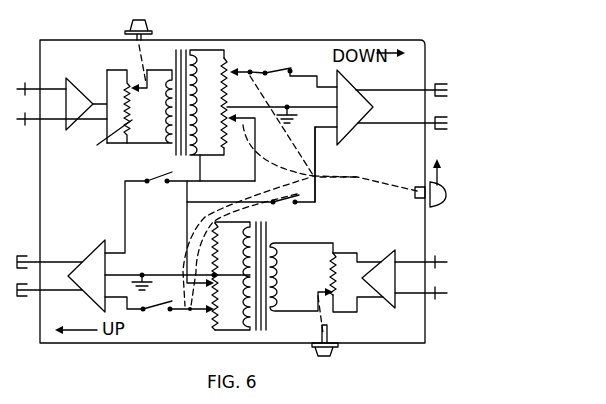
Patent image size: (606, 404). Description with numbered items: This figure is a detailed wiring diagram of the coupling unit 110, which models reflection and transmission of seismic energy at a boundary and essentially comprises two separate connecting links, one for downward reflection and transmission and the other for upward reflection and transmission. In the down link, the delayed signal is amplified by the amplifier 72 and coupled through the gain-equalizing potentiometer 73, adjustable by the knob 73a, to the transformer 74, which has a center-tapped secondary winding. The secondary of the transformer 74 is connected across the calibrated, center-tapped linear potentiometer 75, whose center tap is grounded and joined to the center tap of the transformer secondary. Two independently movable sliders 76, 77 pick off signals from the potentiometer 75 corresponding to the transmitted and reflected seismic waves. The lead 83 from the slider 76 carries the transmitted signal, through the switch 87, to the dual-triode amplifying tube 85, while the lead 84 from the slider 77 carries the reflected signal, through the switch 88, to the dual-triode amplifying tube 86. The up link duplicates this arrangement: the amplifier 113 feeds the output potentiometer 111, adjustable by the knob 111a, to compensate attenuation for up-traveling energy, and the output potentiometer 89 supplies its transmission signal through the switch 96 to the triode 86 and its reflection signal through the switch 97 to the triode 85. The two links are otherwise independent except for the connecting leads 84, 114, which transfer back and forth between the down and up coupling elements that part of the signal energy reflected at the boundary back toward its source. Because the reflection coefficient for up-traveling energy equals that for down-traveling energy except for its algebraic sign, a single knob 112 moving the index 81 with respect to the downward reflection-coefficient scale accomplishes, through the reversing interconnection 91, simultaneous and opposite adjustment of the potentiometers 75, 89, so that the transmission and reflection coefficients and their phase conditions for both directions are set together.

The amplifier 72 is at (83, 92).
The gain-equalizing potentiometer 73 is at (100, 115).
The knob 73a is at (147, 25).
The transformer 74 is at (183, 50).
The center-tapped linear potentiometer 75 is at (228, 95).
The slider 76 is at (237, 70).
The slider 77 is at (237, 122).
The lead 83 is at (300, 70).
The lead 84 is at (183, 182).
The dual-triode amplifying tube 85 is at (350, 82).
The dual-triode amplifying tube 86 is at (90, 248).
The switch 87 is at (268, 76).
The switch 88 is at (156, 188).
The output potentiometer 89 is at (212, 315).
The reversing connection 91 is at (360, 180).
The switch 96 is at (150, 303).
The switch 97 is at (297, 203).
The coupling unit 110 is at (42, 192).
The output potentiometer 111 is at (333, 262).
The knob 111a is at (330, 353).
The knob 112 is at (448, 198).
The amplifier 113 is at (372, 258).
The connecting lead 114 is at (317, 163).
The index pointer 81 is at (440, 167).